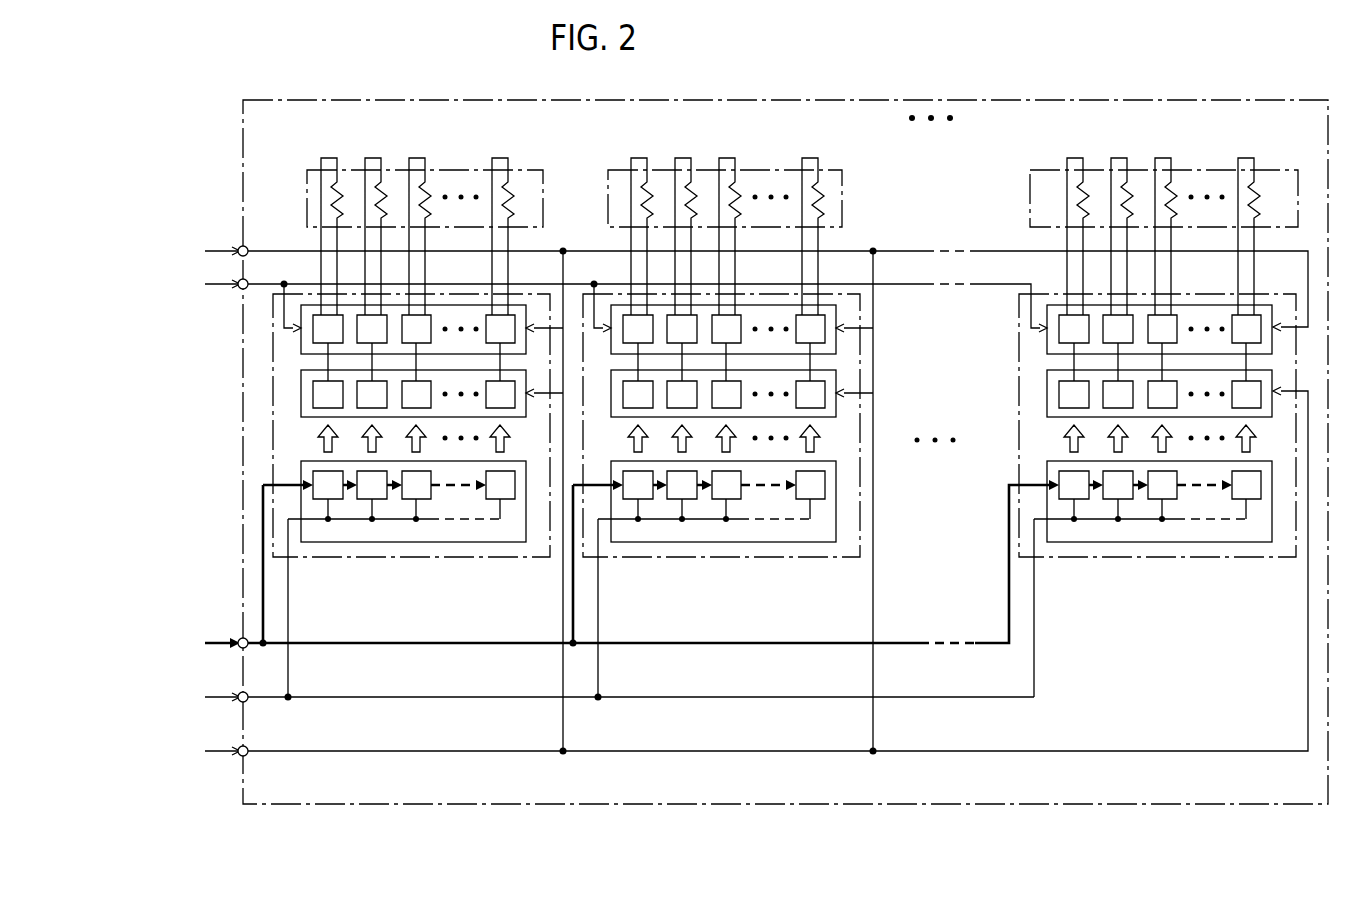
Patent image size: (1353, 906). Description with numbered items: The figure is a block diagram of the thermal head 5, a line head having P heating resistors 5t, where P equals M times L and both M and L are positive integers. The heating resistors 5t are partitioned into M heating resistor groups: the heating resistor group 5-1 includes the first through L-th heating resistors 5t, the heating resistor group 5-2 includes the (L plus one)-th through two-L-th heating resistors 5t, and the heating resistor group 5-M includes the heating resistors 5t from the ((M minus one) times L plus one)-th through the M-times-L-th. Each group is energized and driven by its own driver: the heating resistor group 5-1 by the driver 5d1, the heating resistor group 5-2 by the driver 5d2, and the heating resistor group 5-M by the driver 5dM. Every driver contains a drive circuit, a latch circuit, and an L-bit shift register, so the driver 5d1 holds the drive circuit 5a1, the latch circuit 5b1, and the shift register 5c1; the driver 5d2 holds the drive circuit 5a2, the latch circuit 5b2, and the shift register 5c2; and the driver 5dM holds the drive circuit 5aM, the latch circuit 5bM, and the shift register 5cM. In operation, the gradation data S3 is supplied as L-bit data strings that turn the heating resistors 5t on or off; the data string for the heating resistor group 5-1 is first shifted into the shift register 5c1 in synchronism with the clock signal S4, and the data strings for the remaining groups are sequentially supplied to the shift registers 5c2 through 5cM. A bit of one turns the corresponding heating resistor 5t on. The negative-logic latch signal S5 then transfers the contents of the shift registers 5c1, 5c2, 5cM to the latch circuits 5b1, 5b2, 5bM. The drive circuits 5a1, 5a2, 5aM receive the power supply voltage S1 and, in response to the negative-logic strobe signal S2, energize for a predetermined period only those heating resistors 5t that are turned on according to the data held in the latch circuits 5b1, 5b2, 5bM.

The thermal head 5 is at (867, 100).
The heating resistor 5t is at (514, 192).
The heating resistor group 5-1 is at (515, 153).
The heating resistor group 5-2 is at (825, 153).
The heating resistor group 5-M is at (1261, 153).
The drive circuit 5a1 is at (301, 338).
The latch circuit 5b1 is at (301, 390).
The shift register 5c1 is at (301, 469).
The driver 5d1 is at (391, 558).
The drive circuit 5a2 is at (836, 341).
The latch circuit 5b2 is at (836, 379).
The shift register 5c2 is at (836, 502).
The driver 5d2 is at (701, 558).
The drive circuit 5aM is at (1047, 342).
The latch circuit 5bM is at (1047, 402).
The shift register 5cM is at (1047, 471).
The driver 5dM is at (1138, 558).
The power supply voltage S1 is at (742, 286).
The strobe signal S2 is at (611, 303).
The gradation data S3 is at (219, 636).
The clock signal S4 is at (605, 698).
The latch signal S5 is at (742, 575).